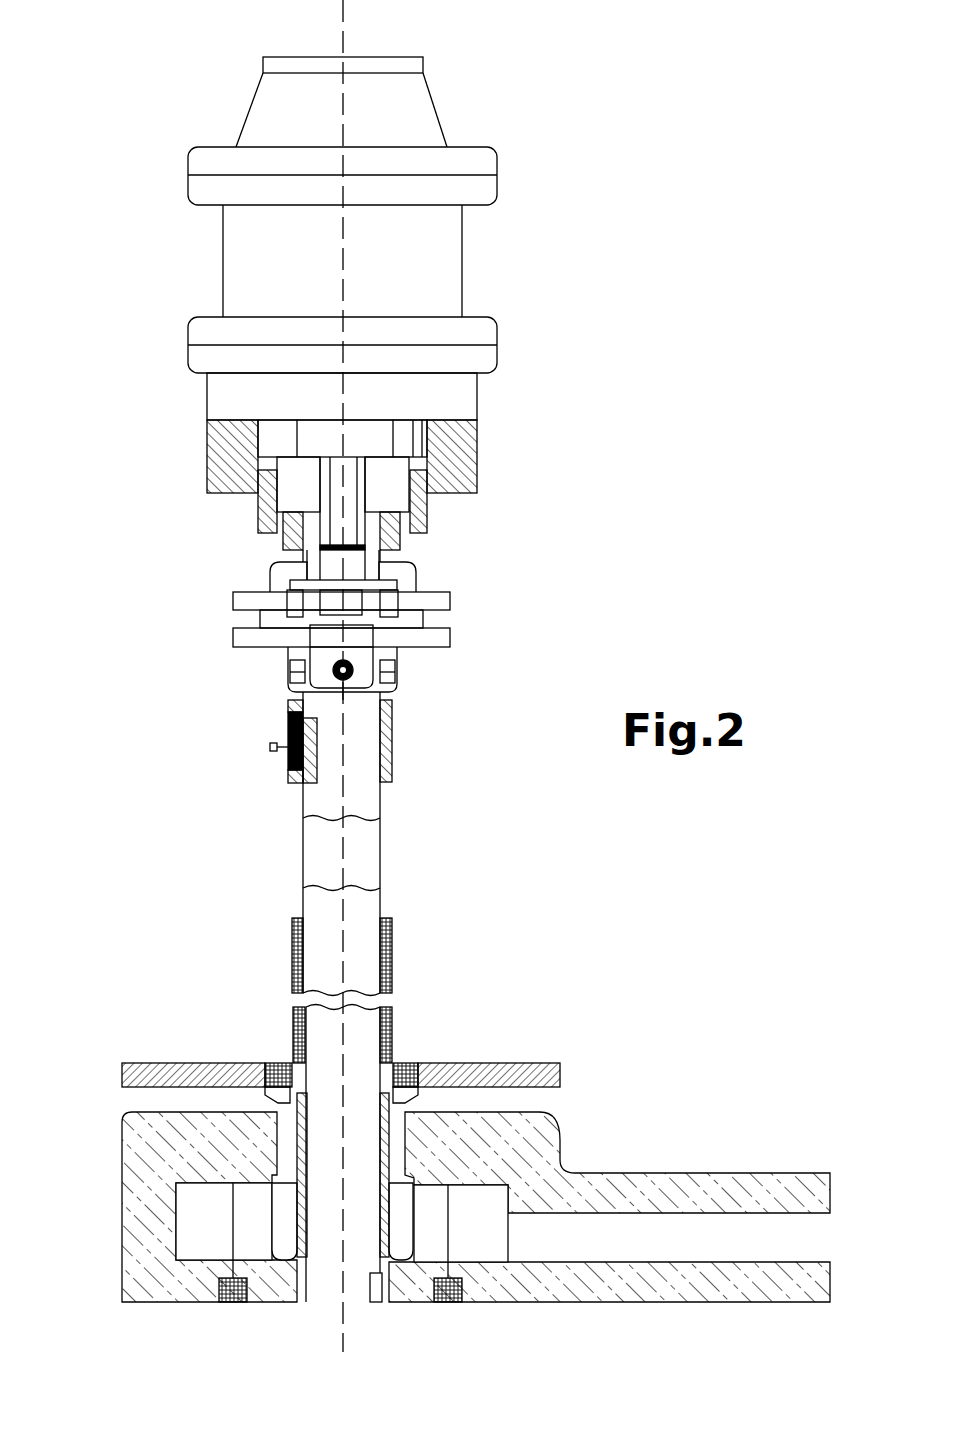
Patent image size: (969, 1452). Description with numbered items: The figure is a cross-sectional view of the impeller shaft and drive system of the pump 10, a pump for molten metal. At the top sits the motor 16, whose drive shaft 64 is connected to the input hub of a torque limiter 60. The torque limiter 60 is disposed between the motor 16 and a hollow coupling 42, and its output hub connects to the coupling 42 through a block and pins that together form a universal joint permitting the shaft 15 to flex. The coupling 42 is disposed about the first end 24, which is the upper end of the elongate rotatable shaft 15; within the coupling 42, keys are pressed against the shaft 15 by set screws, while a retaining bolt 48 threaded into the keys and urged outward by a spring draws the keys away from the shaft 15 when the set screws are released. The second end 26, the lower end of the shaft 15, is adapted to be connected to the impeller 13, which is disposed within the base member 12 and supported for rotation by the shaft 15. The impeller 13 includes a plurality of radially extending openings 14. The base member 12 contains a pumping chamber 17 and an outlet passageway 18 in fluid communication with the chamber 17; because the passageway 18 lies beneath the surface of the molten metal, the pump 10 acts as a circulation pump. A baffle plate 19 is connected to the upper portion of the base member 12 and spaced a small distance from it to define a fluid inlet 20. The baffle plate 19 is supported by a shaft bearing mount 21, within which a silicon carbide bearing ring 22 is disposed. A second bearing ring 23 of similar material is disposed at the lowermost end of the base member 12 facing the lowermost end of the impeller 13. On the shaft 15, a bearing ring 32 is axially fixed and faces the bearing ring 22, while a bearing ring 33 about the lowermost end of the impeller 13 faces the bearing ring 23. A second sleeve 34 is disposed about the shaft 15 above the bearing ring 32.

The pump 10 is at (414, 318).
The base member 12 is at (535, 1130).
The impeller 13 is at (272, 1290).
The radially extending openings 14 is at (252, 1220).
The shaft 15 is at (362, 911).
The motor 16 is at (432, 278).
The pumping chamber 17 is at (195, 1213).
The outlet passageway 18 is at (602, 1262).
The baffle plate 19 is at (173, 1068).
The fluid inlet 20 is at (296, 1050).
The shaft bearing mount 21 is at (275, 1067).
The bearing ring 22 is at (407, 1062).
The second bearing ring 23 is at (458, 1300).
The first end 24 is at (417, 738).
The second end 26 is at (490, 994).
The bearing ring 32 is at (392, 1062).
The bearing ring 33 is at (440, 1300).
The second sleeve 34 is at (295, 955).
The hollow coupling 42 is at (266, 717).
The bolt 48 is at (270, 747).
The torque limiter 60 is at (459, 576).
The drive shaft 64 is at (330, 520).